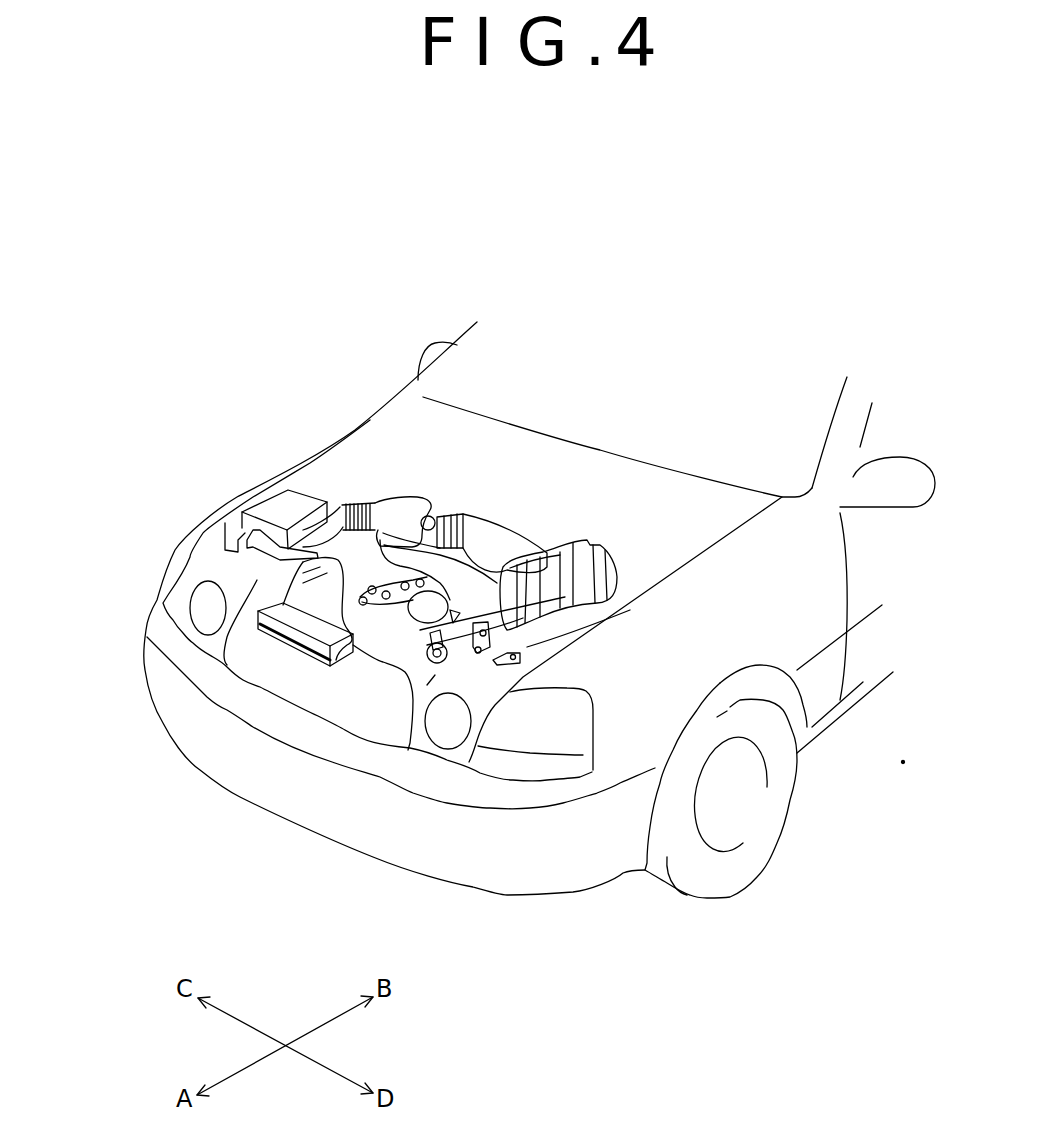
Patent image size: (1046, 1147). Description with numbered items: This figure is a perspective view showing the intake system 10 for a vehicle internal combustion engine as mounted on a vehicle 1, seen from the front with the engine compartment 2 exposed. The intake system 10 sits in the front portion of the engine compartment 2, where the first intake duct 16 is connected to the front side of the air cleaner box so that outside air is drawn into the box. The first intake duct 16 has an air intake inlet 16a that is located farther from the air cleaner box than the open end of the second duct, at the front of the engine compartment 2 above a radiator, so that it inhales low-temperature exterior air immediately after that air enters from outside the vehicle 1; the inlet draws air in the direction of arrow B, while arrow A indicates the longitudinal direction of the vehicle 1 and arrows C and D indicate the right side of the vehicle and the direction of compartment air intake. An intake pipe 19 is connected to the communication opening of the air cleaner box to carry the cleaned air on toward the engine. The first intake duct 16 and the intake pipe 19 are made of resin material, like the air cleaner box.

The vehicle 1 is at (317, 333).
The engine compartment 2 is at (397, 434).
The intake system 10 is at (280, 508).
The intake pipe 19 is at (313, 533).
The first intake duct 16 is at (246, 556).
The air intake inlet 16a is at (296, 640).